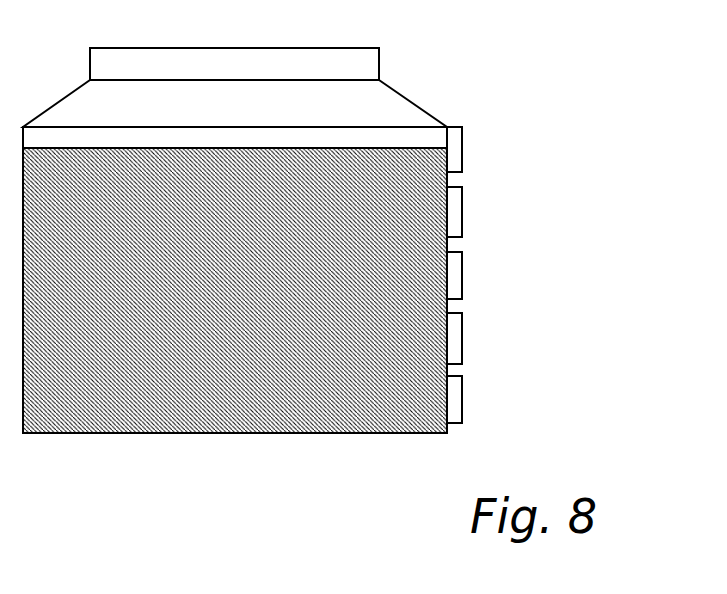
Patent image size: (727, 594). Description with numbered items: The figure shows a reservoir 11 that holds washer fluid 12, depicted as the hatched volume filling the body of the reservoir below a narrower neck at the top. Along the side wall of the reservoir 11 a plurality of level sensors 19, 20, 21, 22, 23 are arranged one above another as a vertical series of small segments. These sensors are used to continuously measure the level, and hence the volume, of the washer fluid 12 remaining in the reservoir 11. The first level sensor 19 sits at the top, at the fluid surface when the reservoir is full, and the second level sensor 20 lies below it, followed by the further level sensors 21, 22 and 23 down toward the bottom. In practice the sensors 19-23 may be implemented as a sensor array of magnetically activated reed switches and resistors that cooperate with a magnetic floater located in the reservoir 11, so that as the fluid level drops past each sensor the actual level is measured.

The reservoir 11 is at (425, 80).
The washer fluid 12 is at (422, 270).
The first level sensor 19 is at (455, 148).
The second level sensor 20 is at (455, 215).
The level sensor 21 is at (455, 290).
The level sensor 22 is at (455, 345).
The level sensor 23 is at (455, 405).